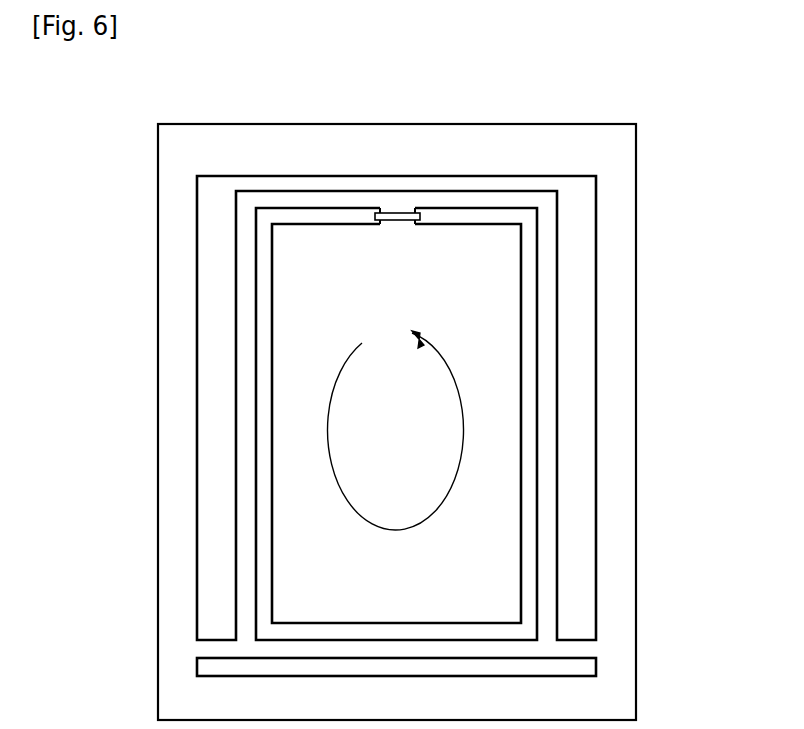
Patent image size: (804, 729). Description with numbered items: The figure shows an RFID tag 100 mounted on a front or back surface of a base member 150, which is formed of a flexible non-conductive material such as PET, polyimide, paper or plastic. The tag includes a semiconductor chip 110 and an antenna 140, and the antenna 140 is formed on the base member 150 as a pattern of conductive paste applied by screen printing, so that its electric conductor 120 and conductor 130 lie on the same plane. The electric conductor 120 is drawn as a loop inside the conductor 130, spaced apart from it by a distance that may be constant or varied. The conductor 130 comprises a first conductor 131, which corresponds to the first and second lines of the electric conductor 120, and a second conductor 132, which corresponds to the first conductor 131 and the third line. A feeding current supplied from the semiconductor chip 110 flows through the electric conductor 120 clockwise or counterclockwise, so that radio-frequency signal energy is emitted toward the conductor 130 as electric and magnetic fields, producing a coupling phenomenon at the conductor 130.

The RFID tag 100 is at (179, 83).
The semiconductor chip 110 is at (398, 213).
The electric conductor 120 is at (530, 561).
The conductor 130 is at (578, 622).
The first conductor 131 is at (212, 563).
The second conductor 132 is at (212, 668).
The antenna 140 is at (421, 426).
The base member 150 is at (613, 318).